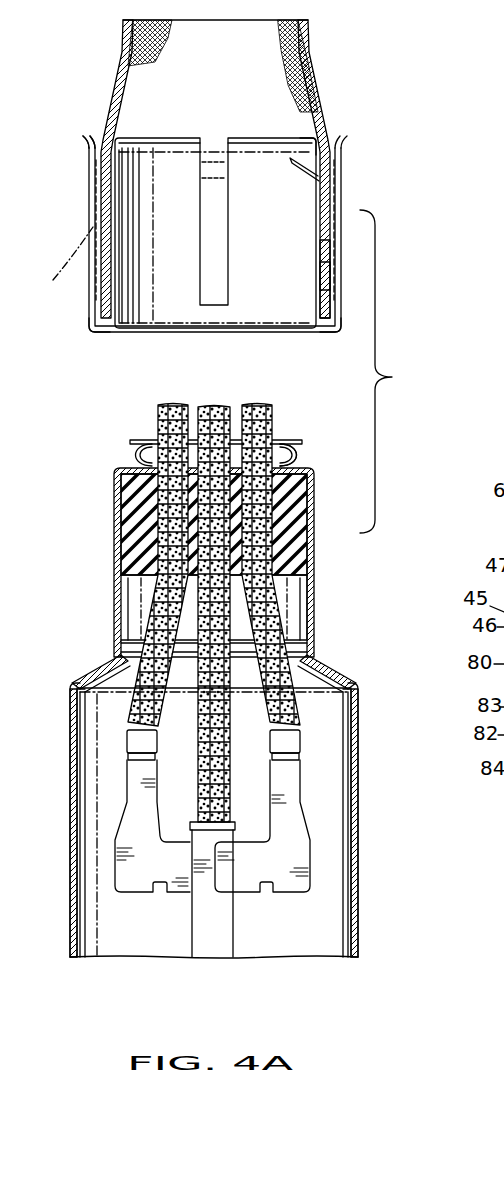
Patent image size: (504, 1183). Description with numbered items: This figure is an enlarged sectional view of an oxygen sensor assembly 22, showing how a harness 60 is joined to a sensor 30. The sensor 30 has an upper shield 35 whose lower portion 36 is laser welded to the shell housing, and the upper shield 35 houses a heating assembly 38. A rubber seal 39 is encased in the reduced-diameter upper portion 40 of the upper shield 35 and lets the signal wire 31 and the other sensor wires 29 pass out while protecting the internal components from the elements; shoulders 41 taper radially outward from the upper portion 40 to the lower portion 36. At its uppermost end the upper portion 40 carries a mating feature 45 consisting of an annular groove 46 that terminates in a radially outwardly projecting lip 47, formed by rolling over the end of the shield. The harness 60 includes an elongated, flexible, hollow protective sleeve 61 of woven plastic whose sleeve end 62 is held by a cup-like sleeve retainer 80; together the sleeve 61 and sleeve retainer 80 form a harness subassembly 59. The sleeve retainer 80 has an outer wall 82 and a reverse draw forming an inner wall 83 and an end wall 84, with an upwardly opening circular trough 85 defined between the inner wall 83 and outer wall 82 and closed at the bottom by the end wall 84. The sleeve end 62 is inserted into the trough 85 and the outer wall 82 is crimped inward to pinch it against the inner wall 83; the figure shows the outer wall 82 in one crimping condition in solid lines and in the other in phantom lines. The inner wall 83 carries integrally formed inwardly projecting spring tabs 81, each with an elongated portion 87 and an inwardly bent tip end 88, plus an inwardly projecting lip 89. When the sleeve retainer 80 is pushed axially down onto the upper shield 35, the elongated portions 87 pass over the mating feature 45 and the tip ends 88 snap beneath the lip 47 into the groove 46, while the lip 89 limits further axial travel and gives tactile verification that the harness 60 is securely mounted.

The oxygen sensor assembly 22 is at (403, 375).
The sensor wires 29 is at (160, 415).
The sensor 30 is at (187, 837).
The signal wire 31 is at (214, 413).
The upper shield 35 is at (71, 943).
The lower portion 36 is at (73, 862).
The heating assembly 38 is at (218, 955).
The rubber seal 39 is at (128, 540).
The upper portion 40 is at (169, 562).
The shoulders 41 is at (107, 662).
The mating feature 45 is at (297, 458).
The annular groove 46 is at (130, 452).
The outwardly projecting lip 47 is at (128, 443).
The harness subassembly 59 is at (319, 43).
The harness 60 is at (122, 32).
The protective sleeve 61 is at (119, 78).
The sleeve end 62 is at (331, 275).
The sleeve retainer 80 is at (337, 197).
The spring tabs 81 is at (311, 236).
The outer wall 82 is at (93, 252).
The inner wall 83 is at (120, 297).
The end wall 84 is at (104, 331).
The circular trough 85 is at (100, 140).
The elongated portion 87 is at (325, 275).
The inwardly bent tip end 88 is at (301, 168).
The inwardly projecting lip 89 is at (307, 138).